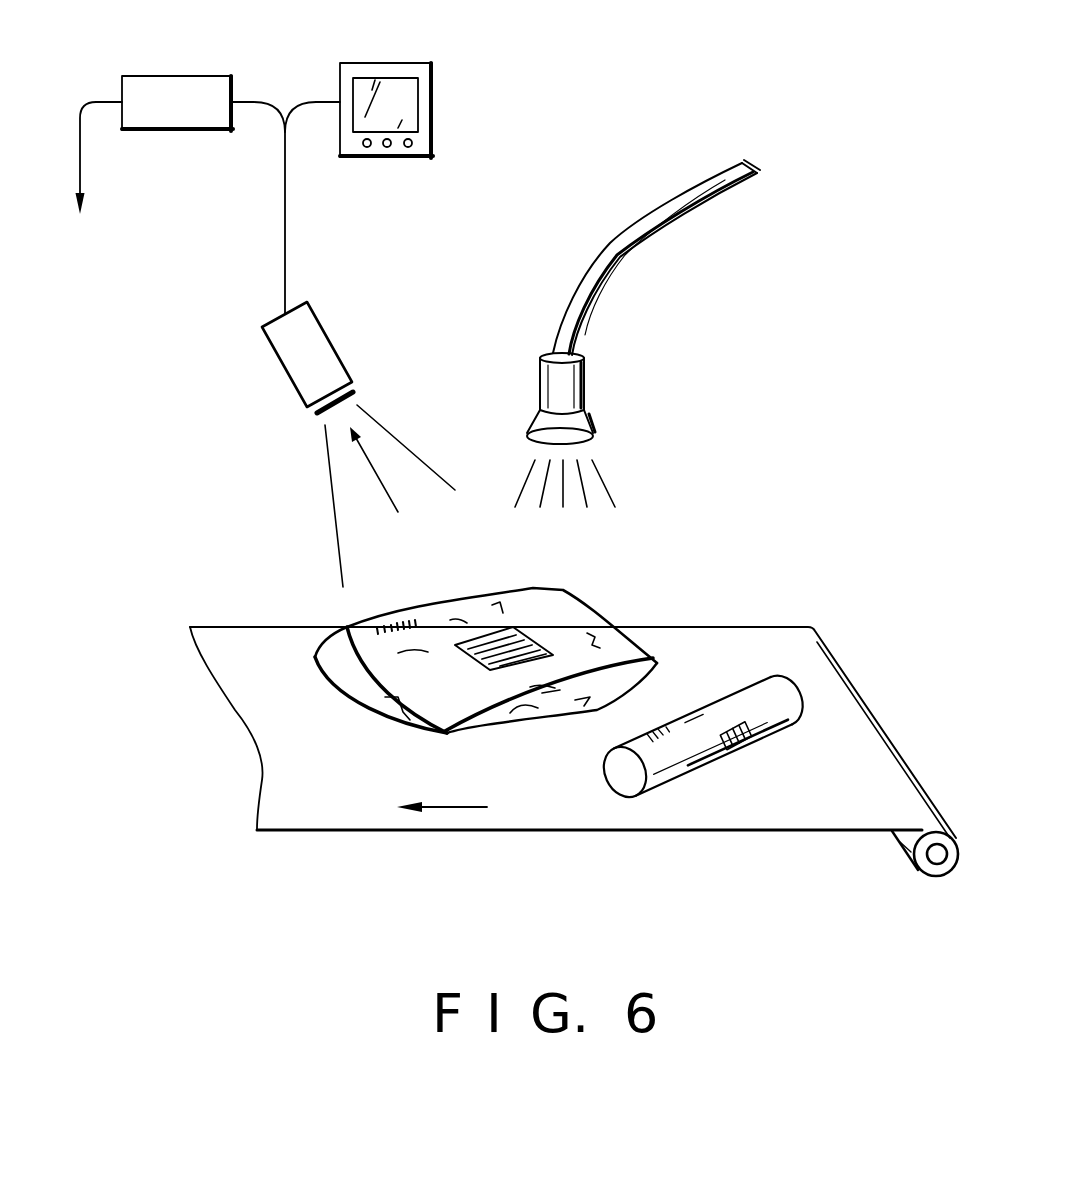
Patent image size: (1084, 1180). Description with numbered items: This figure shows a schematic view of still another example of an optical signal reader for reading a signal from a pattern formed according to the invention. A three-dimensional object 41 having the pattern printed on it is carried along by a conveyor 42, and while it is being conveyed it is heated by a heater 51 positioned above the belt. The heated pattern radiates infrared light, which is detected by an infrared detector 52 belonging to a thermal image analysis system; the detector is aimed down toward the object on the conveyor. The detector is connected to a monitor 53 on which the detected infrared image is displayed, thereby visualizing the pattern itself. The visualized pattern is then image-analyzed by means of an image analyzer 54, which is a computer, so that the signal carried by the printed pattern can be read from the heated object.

The three-dimensional object 41 is at (428, 617).
The conveyor 42 is at (568, 820).
The heater 51 is at (583, 388).
The infrared detector 52 is at (331, 343).
The monitor 53 is at (413, 63).
The image analyzer 54 is at (208, 80).